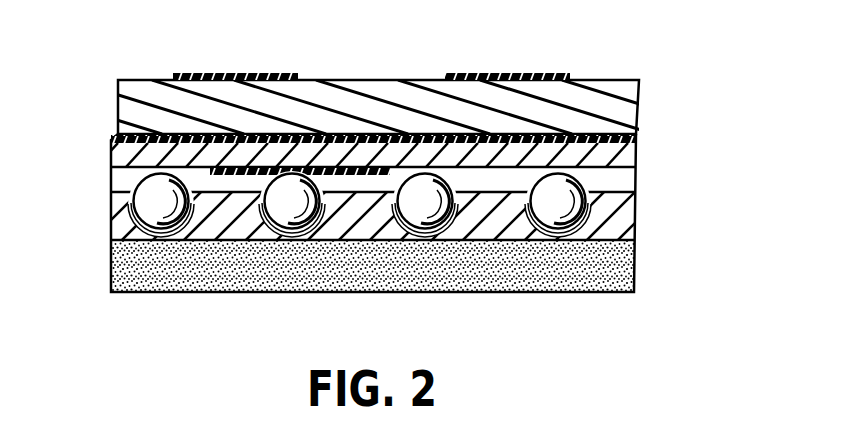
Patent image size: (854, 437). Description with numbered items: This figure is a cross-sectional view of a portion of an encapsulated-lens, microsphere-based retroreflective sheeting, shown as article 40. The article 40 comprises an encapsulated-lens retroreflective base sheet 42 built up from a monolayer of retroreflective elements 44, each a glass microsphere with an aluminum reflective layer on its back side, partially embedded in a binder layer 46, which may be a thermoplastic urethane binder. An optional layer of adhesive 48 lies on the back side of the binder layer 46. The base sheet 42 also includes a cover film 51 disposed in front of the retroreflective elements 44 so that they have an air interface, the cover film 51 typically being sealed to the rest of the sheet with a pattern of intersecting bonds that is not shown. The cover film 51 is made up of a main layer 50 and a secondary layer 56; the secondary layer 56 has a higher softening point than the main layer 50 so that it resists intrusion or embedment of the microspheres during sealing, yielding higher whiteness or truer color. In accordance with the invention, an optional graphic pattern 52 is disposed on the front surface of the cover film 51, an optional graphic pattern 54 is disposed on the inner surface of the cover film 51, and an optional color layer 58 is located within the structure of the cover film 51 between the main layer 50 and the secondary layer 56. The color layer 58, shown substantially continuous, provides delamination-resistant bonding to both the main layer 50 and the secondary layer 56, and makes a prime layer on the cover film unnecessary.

The article 40 is at (598, 72).
The encapsulated-lens retroreflective base sheet 42 is at (707, 83).
The retroreflective elements 44 is at (543, 210).
The binder layer 46 is at (112, 220).
The layer of adhesive 48 is at (215, 262).
The main layer 50 is at (148, 88).
The cover film 51 is at (648, 82).
The graphic pattern 52 is at (258, 73).
The graphic pattern 54 is at (111, 147).
The secondary layer 56 is at (122, 155).
The color layer 58 is at (138, 137).